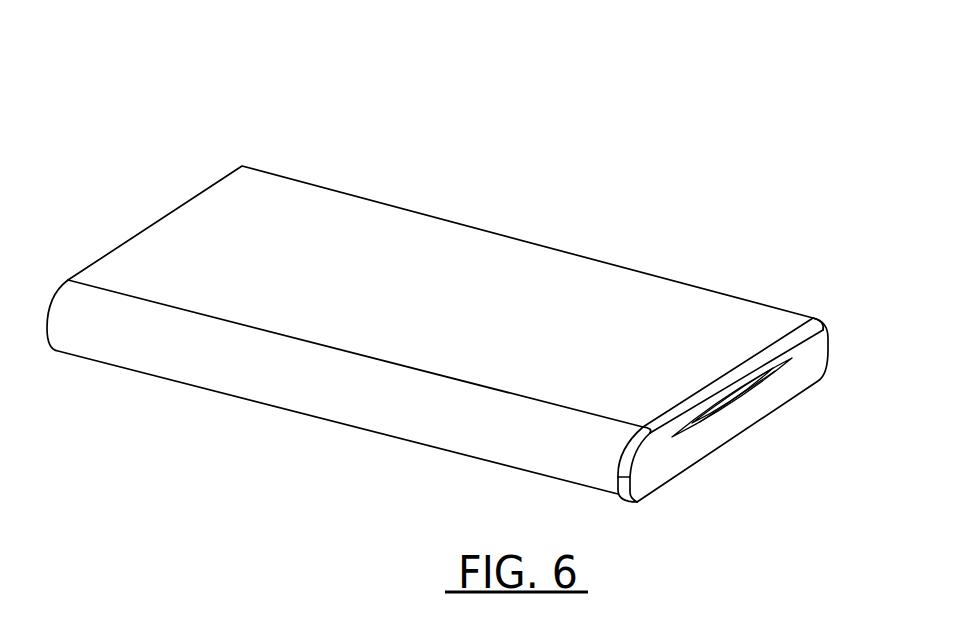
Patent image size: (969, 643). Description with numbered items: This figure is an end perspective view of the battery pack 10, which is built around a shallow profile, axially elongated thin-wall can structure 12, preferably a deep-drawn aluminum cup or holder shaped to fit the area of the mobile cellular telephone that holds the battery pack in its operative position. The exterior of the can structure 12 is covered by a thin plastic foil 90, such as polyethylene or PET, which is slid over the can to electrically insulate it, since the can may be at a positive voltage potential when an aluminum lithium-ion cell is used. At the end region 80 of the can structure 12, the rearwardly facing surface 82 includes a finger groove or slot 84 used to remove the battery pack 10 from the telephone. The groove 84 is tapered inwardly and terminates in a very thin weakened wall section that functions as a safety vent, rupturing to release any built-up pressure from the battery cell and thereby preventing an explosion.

The battery pack 10 is at (480, 270).
The can structure 12 is at (480, 319).
The plastic foil 90 is at (588, 278).
The end region 80 is at (765, 346).
The rearwardly facing surface 82 is at (670, 473).
The finger groove 84 is at (730, 400).